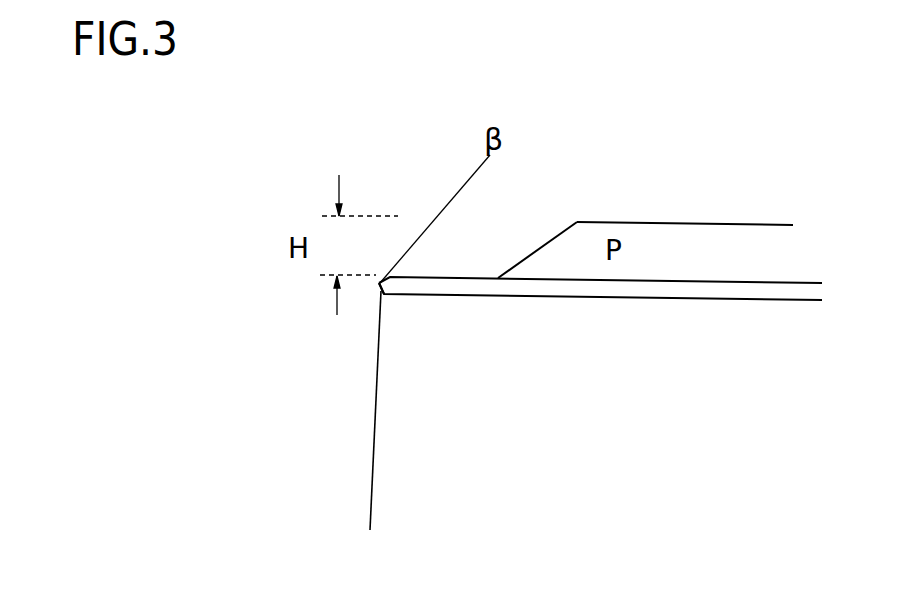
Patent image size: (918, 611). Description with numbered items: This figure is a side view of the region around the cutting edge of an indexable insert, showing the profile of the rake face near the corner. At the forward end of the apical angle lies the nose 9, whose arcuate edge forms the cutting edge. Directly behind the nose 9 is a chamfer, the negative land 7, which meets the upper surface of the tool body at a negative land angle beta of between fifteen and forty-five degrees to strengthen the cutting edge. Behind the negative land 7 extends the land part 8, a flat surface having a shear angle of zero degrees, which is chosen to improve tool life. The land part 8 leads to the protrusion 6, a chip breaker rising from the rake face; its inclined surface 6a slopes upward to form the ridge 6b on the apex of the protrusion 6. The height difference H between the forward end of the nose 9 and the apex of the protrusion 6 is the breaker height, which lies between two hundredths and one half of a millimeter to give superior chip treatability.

The protrusion 6 is at (645, 222).
The inclined surface 6a is at (531, 252).
The ridge 6b is at (577, 222).
The negative land 7 is at (385, 290).
The land part 8 is at (447, 277).
The nose 9 is at (382, 293).